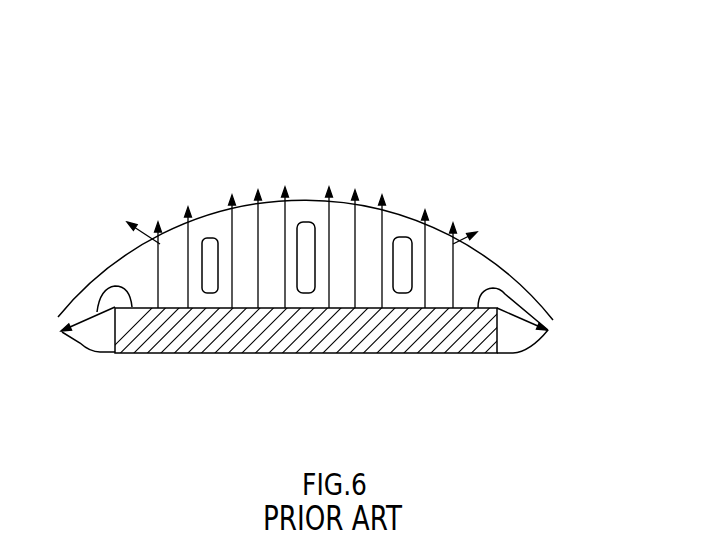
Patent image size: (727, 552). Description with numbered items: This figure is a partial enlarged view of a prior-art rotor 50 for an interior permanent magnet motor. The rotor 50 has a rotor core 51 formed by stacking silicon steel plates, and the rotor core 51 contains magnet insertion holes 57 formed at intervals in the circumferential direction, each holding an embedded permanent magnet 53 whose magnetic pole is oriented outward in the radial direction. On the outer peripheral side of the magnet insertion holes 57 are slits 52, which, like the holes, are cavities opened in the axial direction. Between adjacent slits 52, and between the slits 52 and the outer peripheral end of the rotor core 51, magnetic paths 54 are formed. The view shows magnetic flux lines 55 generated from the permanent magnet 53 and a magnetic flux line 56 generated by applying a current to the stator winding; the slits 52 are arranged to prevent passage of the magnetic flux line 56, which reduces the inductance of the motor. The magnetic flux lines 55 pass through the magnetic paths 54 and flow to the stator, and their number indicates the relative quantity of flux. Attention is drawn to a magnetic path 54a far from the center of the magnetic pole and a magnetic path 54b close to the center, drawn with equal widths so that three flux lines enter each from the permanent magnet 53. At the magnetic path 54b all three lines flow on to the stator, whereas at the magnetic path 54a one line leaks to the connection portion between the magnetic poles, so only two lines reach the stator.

The rotor 50 is at (523, 102).
The rotor core 51 is at (133, 254).
The slit 52 is at (210, 238).
The permanent magnet 53 is at (451, 337).
The magnetic path 54 is at (355, 184).
The magnetic path far from the magnetic pole center 54a is at (180, 233).
The magnetic path close to the magnetic pole center 54b is at (270, 243).
The magnetic flux line generated from the permanent magnet 55 is at (432, 215).
The magnetic flux line generated by stator winding current 56 is at (133, 215).
The magnet insertion hole 57 is at (507, 323).